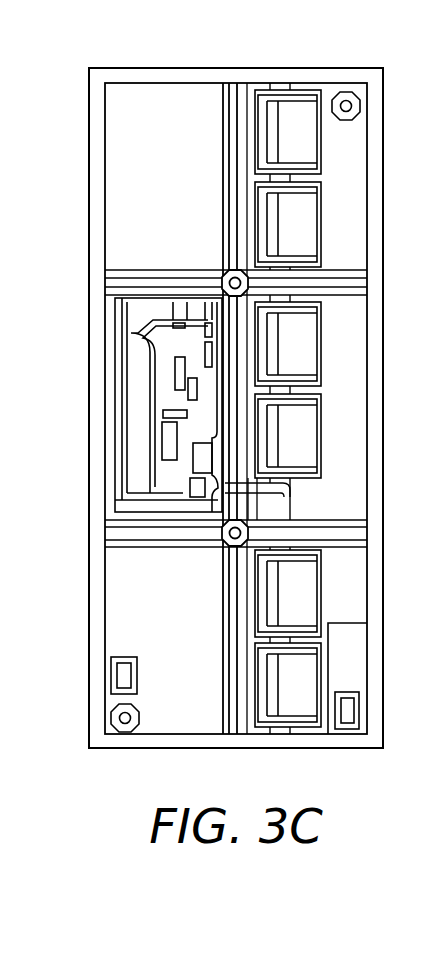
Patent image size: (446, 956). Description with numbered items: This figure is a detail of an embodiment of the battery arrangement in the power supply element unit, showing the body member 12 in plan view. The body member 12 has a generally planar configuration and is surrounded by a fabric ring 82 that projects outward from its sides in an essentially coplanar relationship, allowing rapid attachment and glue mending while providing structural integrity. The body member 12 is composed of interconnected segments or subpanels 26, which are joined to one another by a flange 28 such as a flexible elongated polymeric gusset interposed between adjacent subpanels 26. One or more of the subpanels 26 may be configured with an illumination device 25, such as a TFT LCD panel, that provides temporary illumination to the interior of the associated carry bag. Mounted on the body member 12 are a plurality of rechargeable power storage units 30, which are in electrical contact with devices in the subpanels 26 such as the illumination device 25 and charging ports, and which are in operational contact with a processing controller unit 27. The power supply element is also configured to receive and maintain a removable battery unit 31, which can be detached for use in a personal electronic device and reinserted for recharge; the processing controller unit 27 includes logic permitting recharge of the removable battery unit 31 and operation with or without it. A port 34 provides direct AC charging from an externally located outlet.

The body member 12 is at (340, 67).
The fabric ring 82 is at (217, 68).
The illumination device 25 is at (181, 184).
The subpanels 26 is at (348, 416).
The processing controller unit 27 is at (125, 410).
The flange 28 is at (348, 278).
The rechargeable power storage unit 30 is at (321, 138).
The removable battery unit 31 is at (305, 708).
The port 34 is at (352, 106).